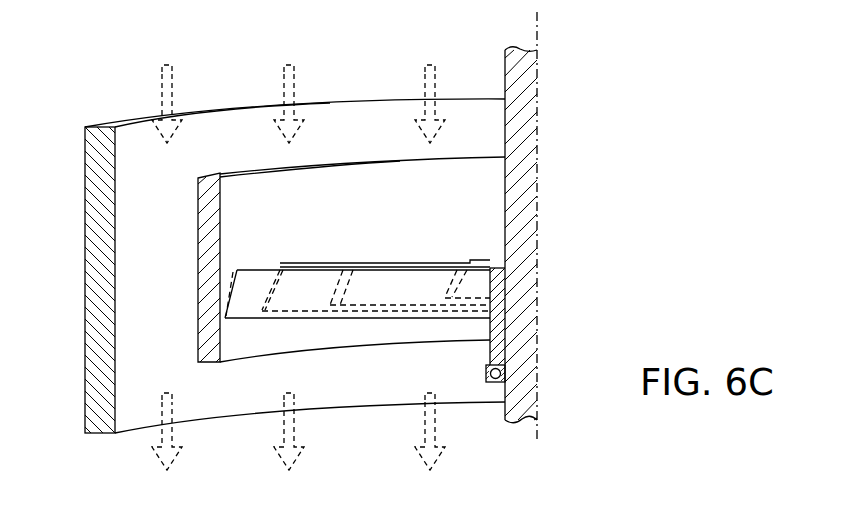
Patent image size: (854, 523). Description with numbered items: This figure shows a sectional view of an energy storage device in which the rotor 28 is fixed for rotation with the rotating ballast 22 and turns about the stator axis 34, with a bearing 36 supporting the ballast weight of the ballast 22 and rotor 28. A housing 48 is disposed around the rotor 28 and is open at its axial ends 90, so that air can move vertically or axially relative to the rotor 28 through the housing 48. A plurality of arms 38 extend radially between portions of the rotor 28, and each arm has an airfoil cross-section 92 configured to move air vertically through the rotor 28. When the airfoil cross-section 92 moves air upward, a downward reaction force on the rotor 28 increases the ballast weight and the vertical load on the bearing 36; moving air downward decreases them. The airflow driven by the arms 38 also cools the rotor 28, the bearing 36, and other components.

The ballast 22 is at (209, 220).
The rotor 28 is at (525, 165).
The stator axis 34 is at (538, 28).
The bearing 36 is at (490, 383).
The arms 38 is at (308, 290).
The housing 48 is at (148, 140).
The axial ends 90 is at (306, 70).
The airfoil cross-section 92 is at (230, 268).